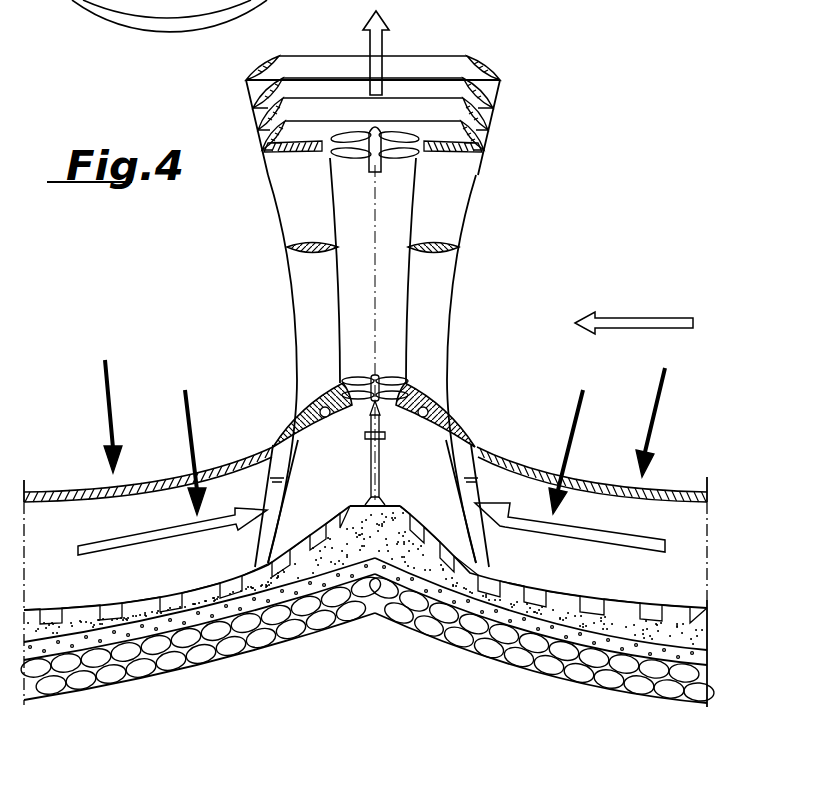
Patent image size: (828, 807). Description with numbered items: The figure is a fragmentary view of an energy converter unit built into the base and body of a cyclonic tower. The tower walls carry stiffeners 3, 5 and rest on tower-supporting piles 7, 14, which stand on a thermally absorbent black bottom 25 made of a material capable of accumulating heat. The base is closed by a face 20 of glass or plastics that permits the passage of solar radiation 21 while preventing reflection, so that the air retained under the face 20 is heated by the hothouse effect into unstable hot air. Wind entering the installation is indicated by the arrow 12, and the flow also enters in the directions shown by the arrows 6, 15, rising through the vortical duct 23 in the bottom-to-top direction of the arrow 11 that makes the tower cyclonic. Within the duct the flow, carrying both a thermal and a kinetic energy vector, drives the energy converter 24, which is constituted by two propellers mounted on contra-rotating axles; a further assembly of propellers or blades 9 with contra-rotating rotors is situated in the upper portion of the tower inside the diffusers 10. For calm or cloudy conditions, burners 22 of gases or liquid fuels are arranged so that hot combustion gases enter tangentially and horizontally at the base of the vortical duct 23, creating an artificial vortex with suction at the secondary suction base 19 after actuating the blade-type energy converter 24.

The stiffener 3 is at (303, 247).
The stiffener 5 is at (447, 247).
The arrow 6 is at (143, 541).
The tower-supporting pile 7 is at (258, 555).
The assembly of propellers or blades 9 is at (410, 136).
The diffusers 10 is at (512, 105).
The arrow 11 is at (377, 42).
The arrow 12 is at (645, 320).
The tower-supporting pile 14 is at (485, 543).
The arrow 15 is at (598, 535).
The secondary suction base 19 is at (70, 528).
The face 20 is at (82, 490).
The solar radiation 21 is at (185, 400).
The burners 22 is at (320, 412).
The vortical duct 23 is at (383, 324).
The energy converter 24 is at (397, 381).
The thermally absorbent black bottom 25 is at (672, 580).